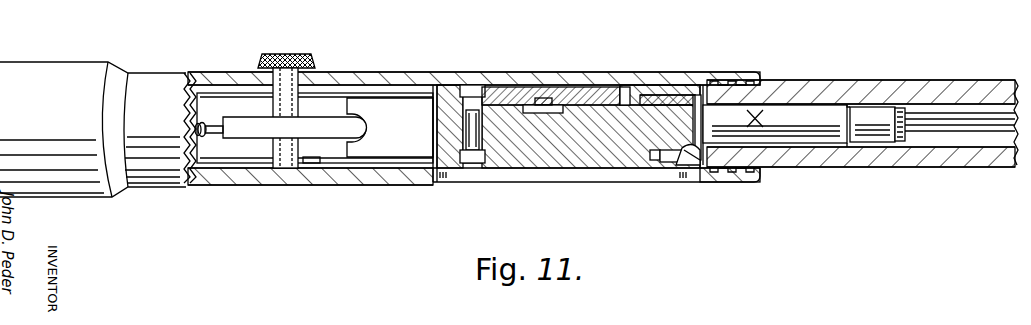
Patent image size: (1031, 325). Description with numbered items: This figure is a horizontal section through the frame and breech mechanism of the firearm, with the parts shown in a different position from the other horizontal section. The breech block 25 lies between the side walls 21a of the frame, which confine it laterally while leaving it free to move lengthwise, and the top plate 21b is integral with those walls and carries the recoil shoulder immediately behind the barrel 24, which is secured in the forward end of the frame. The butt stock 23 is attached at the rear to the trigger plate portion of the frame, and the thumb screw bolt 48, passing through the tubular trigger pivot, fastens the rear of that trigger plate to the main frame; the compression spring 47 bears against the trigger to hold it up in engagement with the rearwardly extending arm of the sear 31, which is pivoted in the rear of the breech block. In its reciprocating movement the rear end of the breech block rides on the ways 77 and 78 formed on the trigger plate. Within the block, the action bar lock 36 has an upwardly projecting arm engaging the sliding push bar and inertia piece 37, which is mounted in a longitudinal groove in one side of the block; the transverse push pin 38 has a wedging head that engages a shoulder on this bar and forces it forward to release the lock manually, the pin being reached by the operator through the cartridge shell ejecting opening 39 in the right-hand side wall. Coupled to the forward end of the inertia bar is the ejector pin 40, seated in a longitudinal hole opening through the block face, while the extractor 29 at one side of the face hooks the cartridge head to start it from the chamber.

The butt stock 23 is at (28, 73).
The top plate 21b is at (151, 77).
The side walls 21a is at (389, 74).
The thumb screw bolt 48 is at (293, 42).
The way 77 is at (323, 92).
The sear 31 is at (295, 127).
The compression spring 47 is at (200, 124).
The way 78 is at (230, 164).
The push bar and inertia piece 37 is at (425, 73).
The transverse push pin 38 is at (469, 85).
The action bar lock 36 is at (548, 104).
The ejector pin 40 is at (633, 107).
The breech block 25 is at (508, 170).
The cartridge shell ejecting opening 39 is at (562, 172).
The extractor 29 is at (670, 163).
The barrel 24 is at (788, 88).